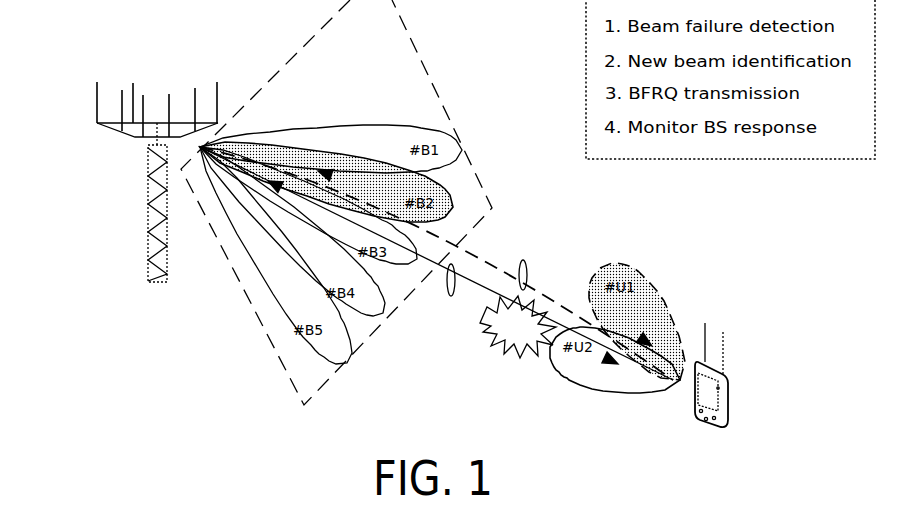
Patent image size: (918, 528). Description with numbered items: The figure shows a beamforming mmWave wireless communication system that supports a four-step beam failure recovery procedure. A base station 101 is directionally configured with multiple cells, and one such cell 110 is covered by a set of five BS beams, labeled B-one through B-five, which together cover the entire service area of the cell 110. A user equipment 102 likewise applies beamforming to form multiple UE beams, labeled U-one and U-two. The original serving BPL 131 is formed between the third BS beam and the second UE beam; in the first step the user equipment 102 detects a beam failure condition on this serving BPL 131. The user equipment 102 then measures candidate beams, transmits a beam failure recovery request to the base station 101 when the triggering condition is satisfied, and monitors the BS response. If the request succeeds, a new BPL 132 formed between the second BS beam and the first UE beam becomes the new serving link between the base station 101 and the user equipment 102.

The base station 101 is at (156, 93).
The user equipment 102 is at (715, 330).
The cell 110 is at (375, 51).
The serving BPL 131 is at (452, 297).
The new BPL 132 is at (523, 260).